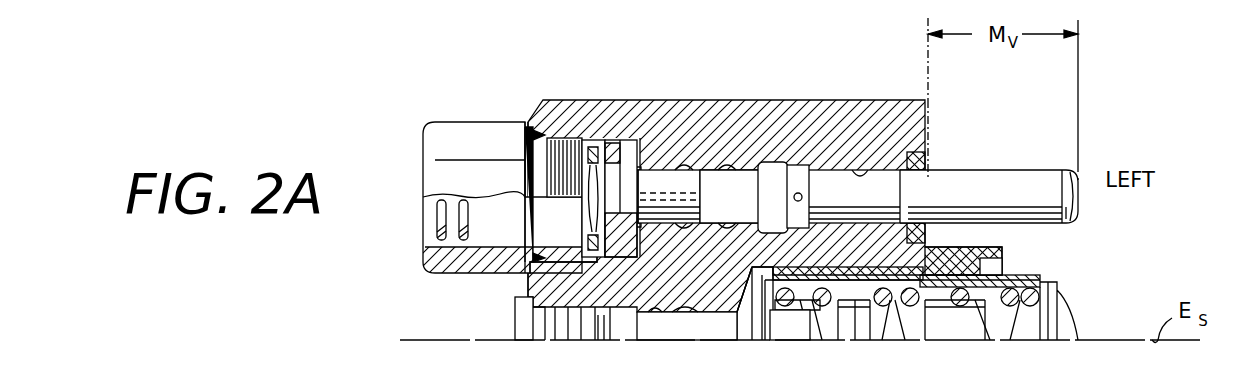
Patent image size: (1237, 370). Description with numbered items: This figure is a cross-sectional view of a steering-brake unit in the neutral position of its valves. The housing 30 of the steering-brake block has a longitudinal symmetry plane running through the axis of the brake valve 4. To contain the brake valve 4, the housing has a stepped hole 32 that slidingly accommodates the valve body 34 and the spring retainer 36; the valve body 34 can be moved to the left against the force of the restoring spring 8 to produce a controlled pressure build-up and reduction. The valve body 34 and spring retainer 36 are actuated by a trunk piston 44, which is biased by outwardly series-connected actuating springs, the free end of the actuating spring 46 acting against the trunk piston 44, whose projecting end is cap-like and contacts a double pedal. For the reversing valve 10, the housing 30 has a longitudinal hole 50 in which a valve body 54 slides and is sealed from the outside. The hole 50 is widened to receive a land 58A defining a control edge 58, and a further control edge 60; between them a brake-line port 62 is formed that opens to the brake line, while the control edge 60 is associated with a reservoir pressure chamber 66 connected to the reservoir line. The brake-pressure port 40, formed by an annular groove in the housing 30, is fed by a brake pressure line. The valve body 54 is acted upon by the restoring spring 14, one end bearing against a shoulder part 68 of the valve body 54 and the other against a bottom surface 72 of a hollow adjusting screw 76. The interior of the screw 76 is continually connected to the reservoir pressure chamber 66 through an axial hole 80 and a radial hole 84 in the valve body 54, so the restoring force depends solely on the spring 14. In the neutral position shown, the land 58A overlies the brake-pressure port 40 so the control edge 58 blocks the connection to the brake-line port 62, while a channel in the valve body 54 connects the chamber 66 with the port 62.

The brake valve 4 is at (1030, 270).
The restoring spring 8 is at (587, 320).
The reversing valve 10 is at (936, 157).
The restoring spring 14 is at (425, 250).
The housing 30 is at (852, 100).
The stepped hole 32 is at (750, 275).
The valve body 34 is at (680, 338).
The spring retainer 36 is at (780, 338).
The brake-pressure port 40 is at (682, 168).
The trunk piston 44 is at (1037, 280).
The actuating spring 46 is at (1057, 292).
The longitudinal hole 50 is at (862, 177).
The valve body 54 is at (990, 175).
The control edge 58 is at (708, 168).
The land 58A is at (664, 223).
The control edge 60 is at (756, 163).
The brake-line port 62 is at (734, 165).
The reservoir pressure chamber 66 is at (814, 168).
The shoulder part 68 is at (625, 157).
The bottom surface 72 is at (438, 210).
The hollow adjusting screw 76 is at (463, 125).
The axial hole 80 is at (654, 140).
The radial hole 84 is at (798, 192).